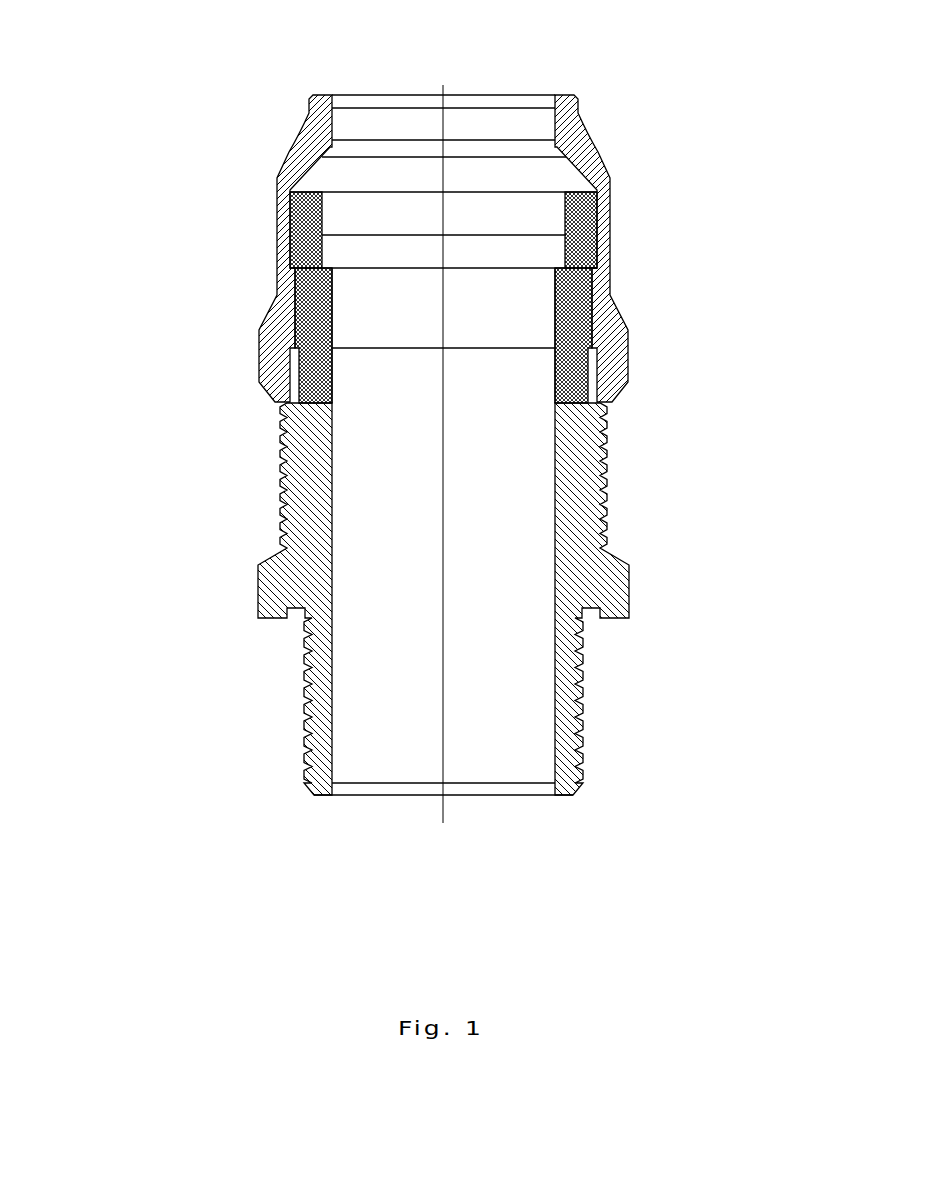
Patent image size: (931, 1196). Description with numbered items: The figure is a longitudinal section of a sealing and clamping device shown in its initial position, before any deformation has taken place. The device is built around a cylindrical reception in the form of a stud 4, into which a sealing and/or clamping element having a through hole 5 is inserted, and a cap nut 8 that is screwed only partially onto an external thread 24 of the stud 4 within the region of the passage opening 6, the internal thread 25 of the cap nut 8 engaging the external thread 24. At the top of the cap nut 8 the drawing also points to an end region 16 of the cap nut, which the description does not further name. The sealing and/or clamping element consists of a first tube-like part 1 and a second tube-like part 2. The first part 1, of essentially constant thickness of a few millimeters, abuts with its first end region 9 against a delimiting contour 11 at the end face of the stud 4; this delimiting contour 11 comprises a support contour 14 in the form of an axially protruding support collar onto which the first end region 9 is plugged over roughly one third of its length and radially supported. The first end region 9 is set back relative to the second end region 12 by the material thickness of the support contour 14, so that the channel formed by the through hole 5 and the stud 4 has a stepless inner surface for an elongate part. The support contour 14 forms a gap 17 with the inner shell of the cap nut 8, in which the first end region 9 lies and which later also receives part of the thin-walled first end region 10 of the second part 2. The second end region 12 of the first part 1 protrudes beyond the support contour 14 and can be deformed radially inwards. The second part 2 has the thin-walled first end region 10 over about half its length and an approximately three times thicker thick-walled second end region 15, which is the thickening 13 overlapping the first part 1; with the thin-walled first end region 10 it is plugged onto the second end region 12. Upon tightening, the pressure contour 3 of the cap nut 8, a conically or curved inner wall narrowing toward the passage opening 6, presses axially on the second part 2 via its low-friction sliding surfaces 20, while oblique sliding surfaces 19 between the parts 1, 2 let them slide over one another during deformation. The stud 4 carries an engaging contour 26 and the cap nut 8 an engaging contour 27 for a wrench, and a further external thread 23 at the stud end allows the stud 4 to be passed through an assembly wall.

The first tube-like part 1 is at (280, 300).
The second tube-like part 2 is at (280, 226).
The pressure contour 3 is at (598, 147).
The stud 4 is at (226, 734).
The through hole 5 is at (377, 349).
The passage opening 6 is at (537, 344).
The cap nut 8 is at (288, 152).
The first end region 9 is at (267, 357).
The thin-walled first end region 10 is at (622, 323).
The delimiting contour 11 is at (278, 410).
The second end region 12 is at (278, 278).
The thickening 13 is at (612, 222).
The support contour 14 is at (610, 408).
The thick-walled second end region 15 is at (612, 205).
The top opening 16 is at (340, 93).
The gap 17 is at (598, 367).
The oblique sliding surfaces 19 is at (612, 270).
The sliding surfaces 20 is at (610, 183).
The external thread 23 is at (585, 680).
The external thread 24 is at (280, 472).
The internal thread 25 is at (267, 383).
The engaging contour 26 is at (630, 600).
The engaging contour 27 is at (628, 383).